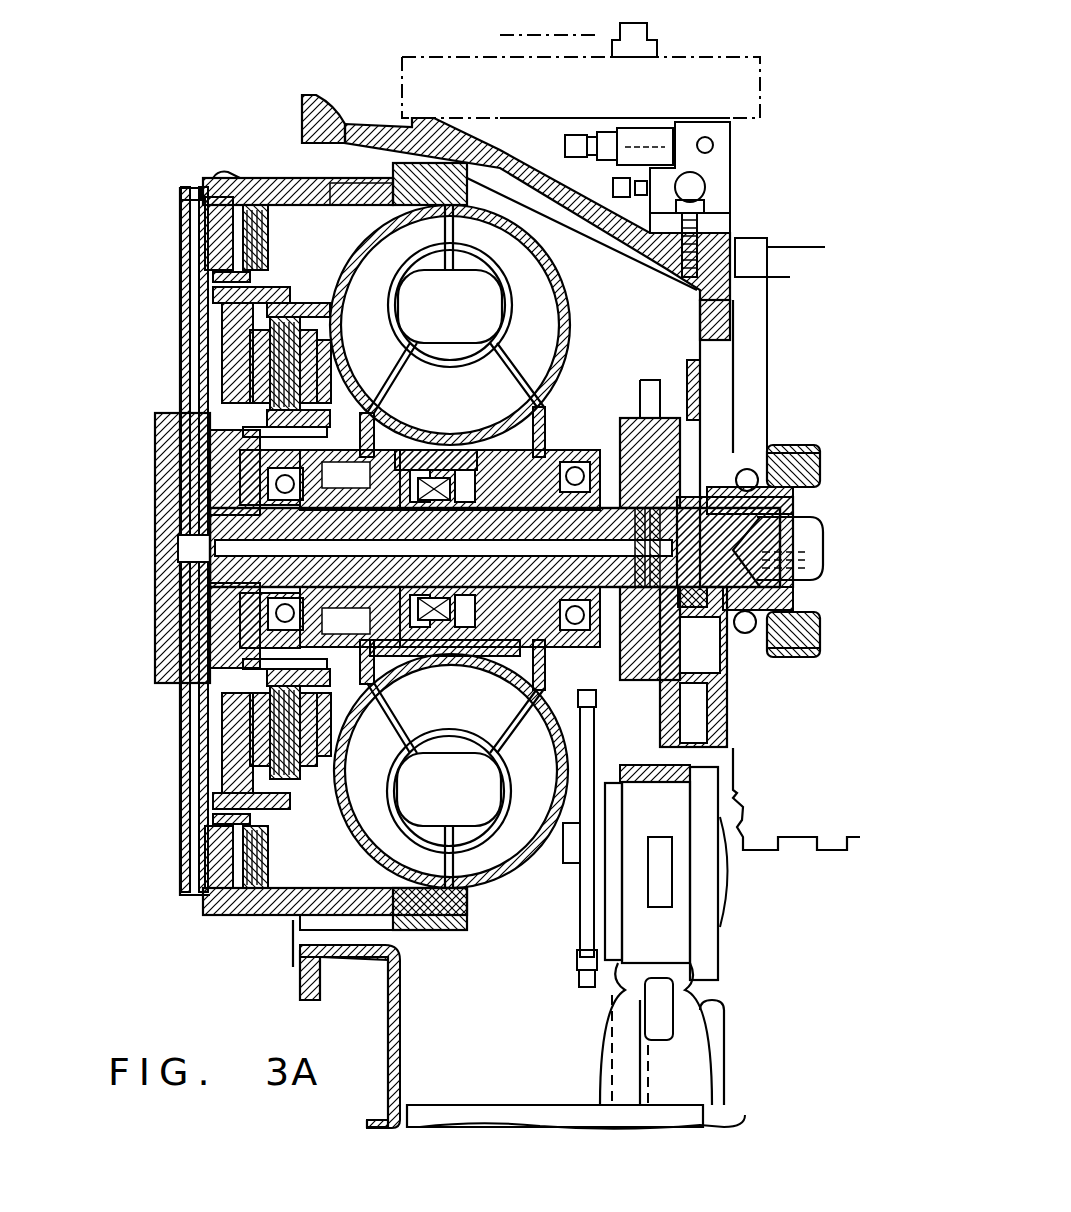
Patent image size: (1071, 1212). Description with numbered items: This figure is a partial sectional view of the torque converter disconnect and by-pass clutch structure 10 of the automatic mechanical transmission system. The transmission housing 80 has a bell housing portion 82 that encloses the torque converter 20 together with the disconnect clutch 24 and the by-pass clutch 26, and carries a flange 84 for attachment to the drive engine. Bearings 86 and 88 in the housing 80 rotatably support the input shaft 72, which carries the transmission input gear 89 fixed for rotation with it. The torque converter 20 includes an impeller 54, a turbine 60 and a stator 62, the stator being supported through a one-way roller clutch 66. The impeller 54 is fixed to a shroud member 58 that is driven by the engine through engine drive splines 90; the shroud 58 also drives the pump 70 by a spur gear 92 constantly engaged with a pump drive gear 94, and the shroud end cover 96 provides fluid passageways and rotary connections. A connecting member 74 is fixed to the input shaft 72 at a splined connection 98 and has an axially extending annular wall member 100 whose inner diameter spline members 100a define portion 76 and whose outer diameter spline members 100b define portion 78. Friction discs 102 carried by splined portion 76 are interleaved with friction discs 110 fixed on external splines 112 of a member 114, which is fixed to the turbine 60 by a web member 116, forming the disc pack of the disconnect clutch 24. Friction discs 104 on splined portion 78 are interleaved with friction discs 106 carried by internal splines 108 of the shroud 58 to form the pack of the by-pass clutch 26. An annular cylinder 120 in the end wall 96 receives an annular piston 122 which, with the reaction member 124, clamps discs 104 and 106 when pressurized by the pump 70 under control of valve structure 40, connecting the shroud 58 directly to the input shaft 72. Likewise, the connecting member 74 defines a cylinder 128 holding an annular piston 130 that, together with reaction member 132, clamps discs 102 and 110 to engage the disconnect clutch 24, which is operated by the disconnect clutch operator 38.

The torque converter disconnect and by-pass clutch structure 10 is at (180, 905).
The torque converter 20 is at (510, 888).
The torque converter disconnect clutch 24 is at (318, 710).
The torque converter by-pass clutch 26 is at (292, 915).
The torque converter disconnect clutch operator 38 is at (678, 92).
The torque converter by-pass clutch operator 40 is at (725, 92).
The impeller 54 is at (450, 325).
The shroud member 58 is at (490, 183).
The turbine 60 is at (442, 300).
The stator 62 is at (448, 337).
The one-way roller clutch 66 is at (440, 490).
The pump 70 is at (668, 815).
The input shaft 72 is at (612, 405).
The connecting member 74 is at (285, 462).
The inner diameter splined portion 76 is at (290, 317).
The outer diameter splined portion 78 is at (285, 295).
The transmission housing 80 is at (770, 265).
The bell housing portion 82 is at (355, 124).
The flange 84 is at (322, 95).
The bearing 86 is at (265, 610).
The bearing 88 is at (750, 640).
The transmission input gear 89 is at (792, 448).
The engine drive splines 90 is at (228, 178).
The spur gear 92 is at (612, 690).
The pump drive gear 94 is at (598, 726).
The shroud end cover 96 is at (182, 320).
The splined connection 98 is at (340, 598).
The annular shaped wall member 100 is at (451, 764).
The inner diameter spline members 100a is at (252, 770).
The outer diameter spline members 100b is at (272, 800).
The friction discs 102 is at (320, 345).
The friction discs 104 is at (245, 277).
The friction discs 106 is at (258, 183).
The internal splines 108 is at (285, 180).
The friction discs 110 is at (320, 368).
The external splines 112 is at (360, 404).
The member 114 is at (350, 480).
The web member 116 is at (423, 791).
The cylinder 120 is at (212, 240).
The annular piston member 122 is at (200, 225).
The annular reaction member 124 is at (275, 232).
The cylinder 128 is at (240, 355).
The annular piston 130 is at (262, 378).
The annular reaction member 132 is at (313, 345).